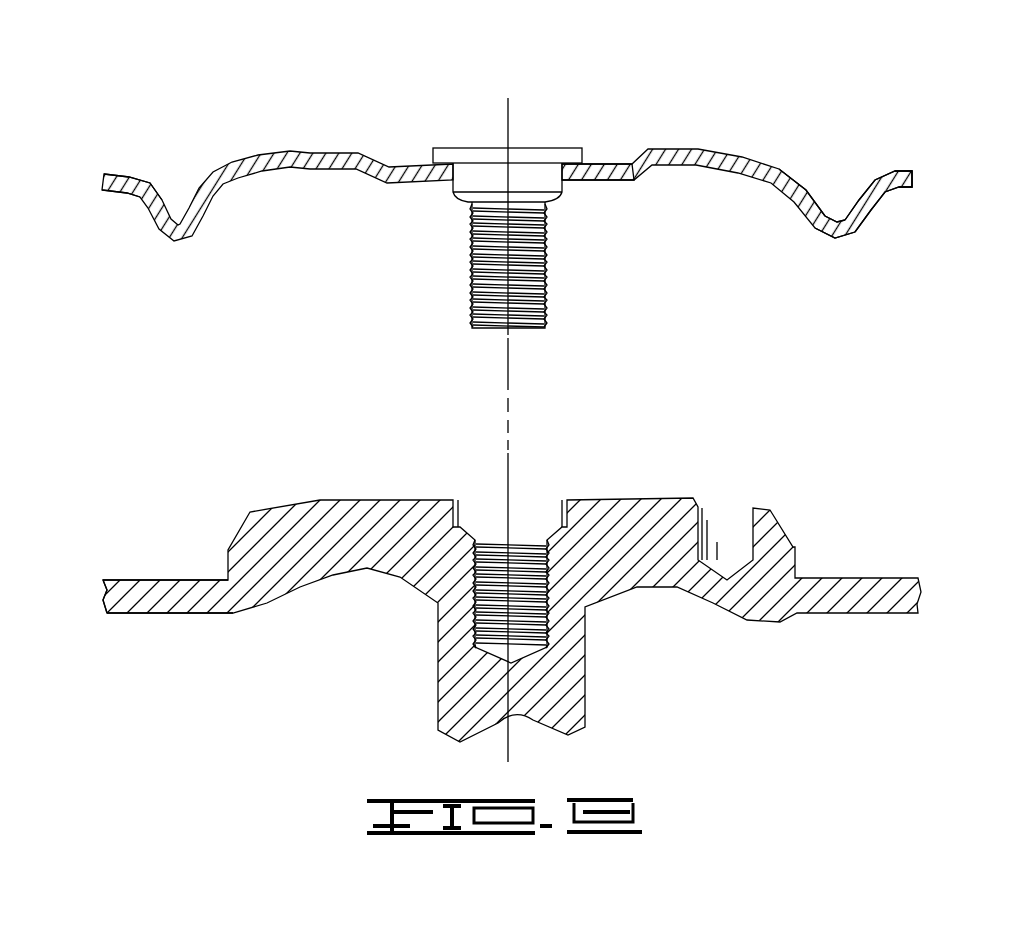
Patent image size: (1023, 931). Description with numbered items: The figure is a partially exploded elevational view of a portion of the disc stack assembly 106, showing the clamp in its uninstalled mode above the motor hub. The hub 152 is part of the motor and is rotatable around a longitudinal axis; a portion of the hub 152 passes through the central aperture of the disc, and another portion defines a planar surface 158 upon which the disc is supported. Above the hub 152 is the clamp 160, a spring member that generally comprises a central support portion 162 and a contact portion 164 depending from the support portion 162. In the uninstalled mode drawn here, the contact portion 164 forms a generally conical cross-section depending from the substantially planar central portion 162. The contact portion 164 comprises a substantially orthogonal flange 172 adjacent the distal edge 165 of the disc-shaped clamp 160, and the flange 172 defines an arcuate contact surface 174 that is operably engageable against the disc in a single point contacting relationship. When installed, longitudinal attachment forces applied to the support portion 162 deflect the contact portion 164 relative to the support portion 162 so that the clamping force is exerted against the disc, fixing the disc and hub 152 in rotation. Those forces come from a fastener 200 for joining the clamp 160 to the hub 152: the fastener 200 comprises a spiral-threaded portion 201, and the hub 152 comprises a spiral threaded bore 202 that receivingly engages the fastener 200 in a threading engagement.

The disc stack assembly 106 is at (222, 83).
The hub 152 is at (512, 584).
The planar surface 158 is at (150, 580).
The clamp 160 is at (690, 143).
The central support portion 162 is at (601, 156).
The contact portion 164 is at (889, 213).
The distal edge 165 is at (917, 169).
The orthogonal flange 172 is at (818, 192).
The arcuate contact surface 174 is at (840, 238).
The fastener 200 is at (504, 187).
The spiral-threaded portion 201 is at (547, 273).
The spiral threaded bore 202 is at (495, 575).